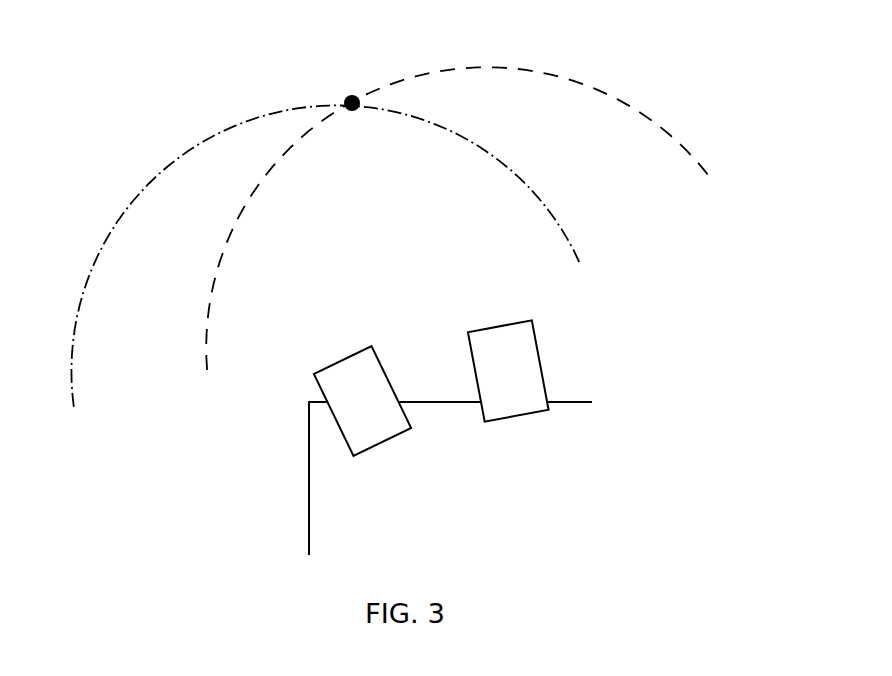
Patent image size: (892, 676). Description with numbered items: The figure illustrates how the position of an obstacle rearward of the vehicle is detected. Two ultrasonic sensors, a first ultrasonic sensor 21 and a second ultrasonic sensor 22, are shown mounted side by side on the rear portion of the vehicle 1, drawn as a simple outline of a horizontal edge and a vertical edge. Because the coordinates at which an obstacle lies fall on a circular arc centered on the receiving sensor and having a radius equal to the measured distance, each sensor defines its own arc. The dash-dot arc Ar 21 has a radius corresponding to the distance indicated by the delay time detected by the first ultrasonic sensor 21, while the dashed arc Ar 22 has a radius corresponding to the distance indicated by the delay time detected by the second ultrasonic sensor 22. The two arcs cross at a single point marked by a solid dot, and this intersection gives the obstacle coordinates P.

The detection device 1 is at (280, 495).
The first ultrasonic sensor 21 is at (362, 401).
The second ultrasonic sensor 22 is at (508, 370).
The arc Ar 21 is at (350, 255).
The arc Ar 22 is at (485, 218).
The obstacle coordinates P is at (350, 79).